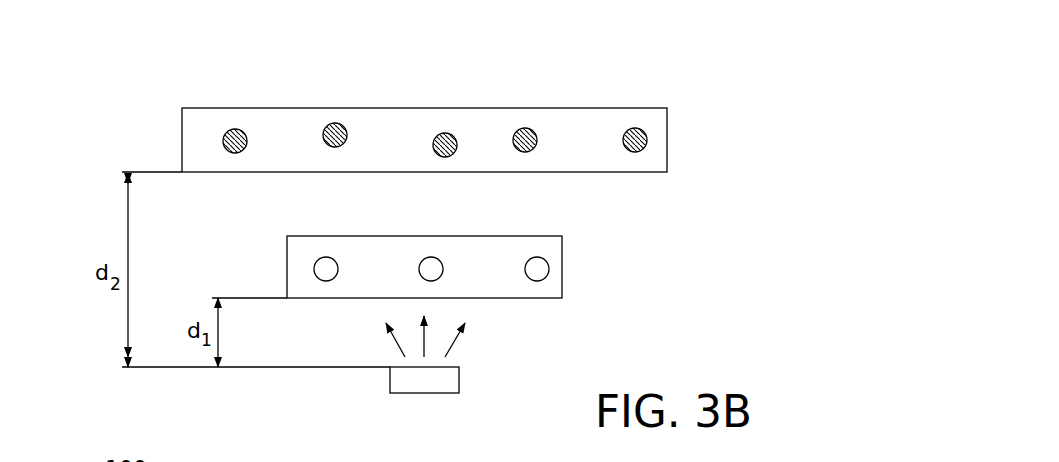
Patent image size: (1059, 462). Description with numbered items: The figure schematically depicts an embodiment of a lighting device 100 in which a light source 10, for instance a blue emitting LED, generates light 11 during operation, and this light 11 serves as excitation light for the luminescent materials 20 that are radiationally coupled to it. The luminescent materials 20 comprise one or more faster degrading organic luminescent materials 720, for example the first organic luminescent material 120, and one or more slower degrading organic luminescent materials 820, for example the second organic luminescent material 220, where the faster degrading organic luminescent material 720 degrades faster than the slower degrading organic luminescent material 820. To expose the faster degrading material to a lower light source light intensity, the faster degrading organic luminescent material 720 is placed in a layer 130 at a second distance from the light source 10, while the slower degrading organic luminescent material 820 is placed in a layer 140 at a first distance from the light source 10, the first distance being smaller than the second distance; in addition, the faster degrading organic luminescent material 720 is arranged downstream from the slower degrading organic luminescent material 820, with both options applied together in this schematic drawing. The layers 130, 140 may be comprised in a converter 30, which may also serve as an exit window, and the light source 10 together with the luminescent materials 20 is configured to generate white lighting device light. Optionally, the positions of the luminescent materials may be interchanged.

The lighting device 100 is at (143, 77).
The converter 30 is at (163, 148).
The layer 130 is at (667, 146).
The first organic luminescent material 120 is at (647, 134).
The faster degrading organic luminescent material 720 is at (634, 130).
The luminescent materials 20 is at (725, 230).
The layer 140 is at (562, 281).
The second organic luminescent material 220 is at (547, 272).
The slower degrading organic luminescent material 820 is at (537, 272).
The light source 10 is at (375, 383).
The light 11 is at (447, 349).